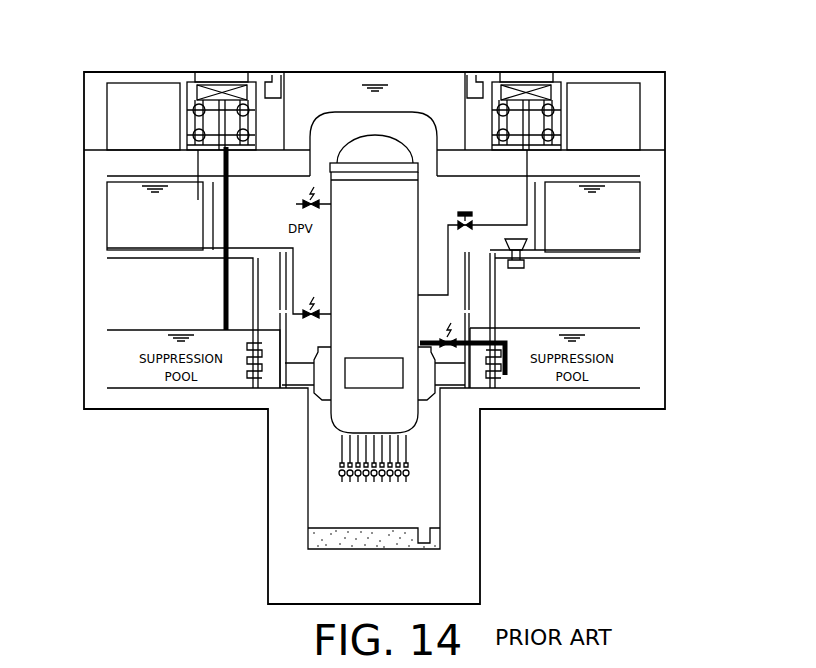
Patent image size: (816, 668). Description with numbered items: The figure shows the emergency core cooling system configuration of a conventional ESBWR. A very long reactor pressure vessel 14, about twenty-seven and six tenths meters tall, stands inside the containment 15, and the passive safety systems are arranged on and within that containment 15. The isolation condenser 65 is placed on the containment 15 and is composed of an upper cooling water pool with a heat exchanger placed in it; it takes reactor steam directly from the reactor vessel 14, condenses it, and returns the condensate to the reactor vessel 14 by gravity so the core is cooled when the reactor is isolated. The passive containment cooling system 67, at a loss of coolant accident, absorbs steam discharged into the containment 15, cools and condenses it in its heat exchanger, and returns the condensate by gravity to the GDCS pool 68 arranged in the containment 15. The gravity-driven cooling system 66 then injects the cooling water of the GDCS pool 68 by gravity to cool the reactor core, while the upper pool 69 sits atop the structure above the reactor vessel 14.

The reactor pressure vessel 14 is at (419, 195).
The containment 15 is at (667, 118).
The isolation condenser 65 is at (547, 72).
The gravity-driven cooling system 66 is at (266, 247).
The passive containment cooling system 67 is at (196, 72).
The GDCS pool 68 is at (117, 218).
The upper pool 69 is at (430, 72).